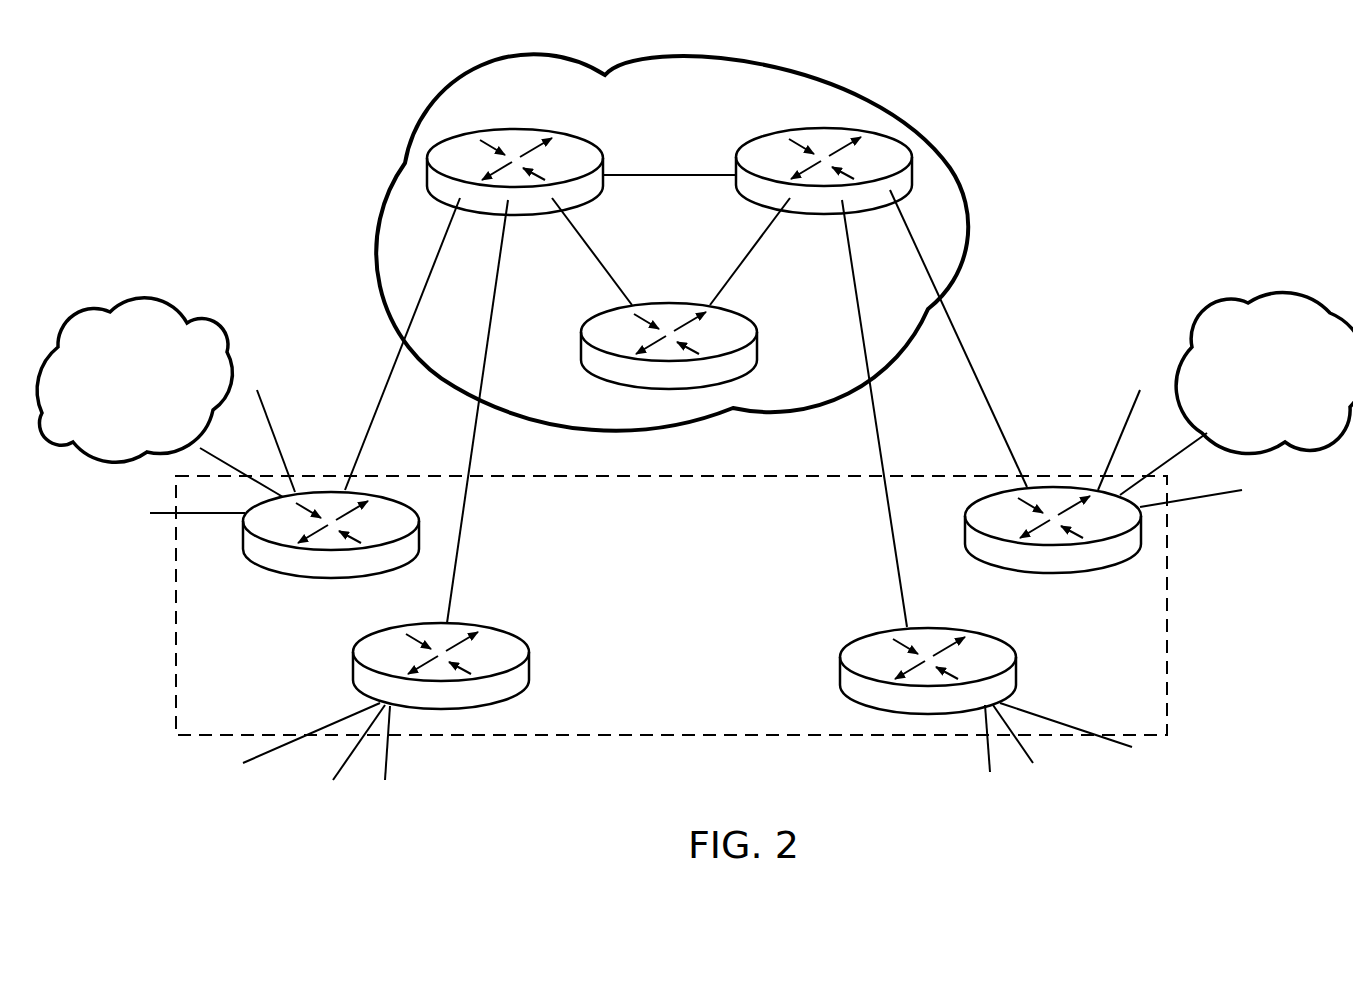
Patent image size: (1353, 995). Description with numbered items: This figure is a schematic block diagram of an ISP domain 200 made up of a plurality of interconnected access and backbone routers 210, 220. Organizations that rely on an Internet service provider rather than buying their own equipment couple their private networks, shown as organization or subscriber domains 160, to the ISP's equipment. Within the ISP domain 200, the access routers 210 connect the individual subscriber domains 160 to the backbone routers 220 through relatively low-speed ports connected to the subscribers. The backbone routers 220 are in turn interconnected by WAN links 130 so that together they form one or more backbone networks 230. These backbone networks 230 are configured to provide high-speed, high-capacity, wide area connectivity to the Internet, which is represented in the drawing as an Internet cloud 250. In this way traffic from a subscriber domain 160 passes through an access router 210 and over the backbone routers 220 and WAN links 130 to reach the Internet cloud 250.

The WAN link 130 is at (664, 175).
The organization domain 160 is at (695, 377).
The ISP domain 200 is at (671, 605).
The access router 210 is at (373, 577).
The backbone router 220 is at (532, 129).
The backbone network 230 is at (672, 252).
The Internet cloud 250 is at (672, 242).